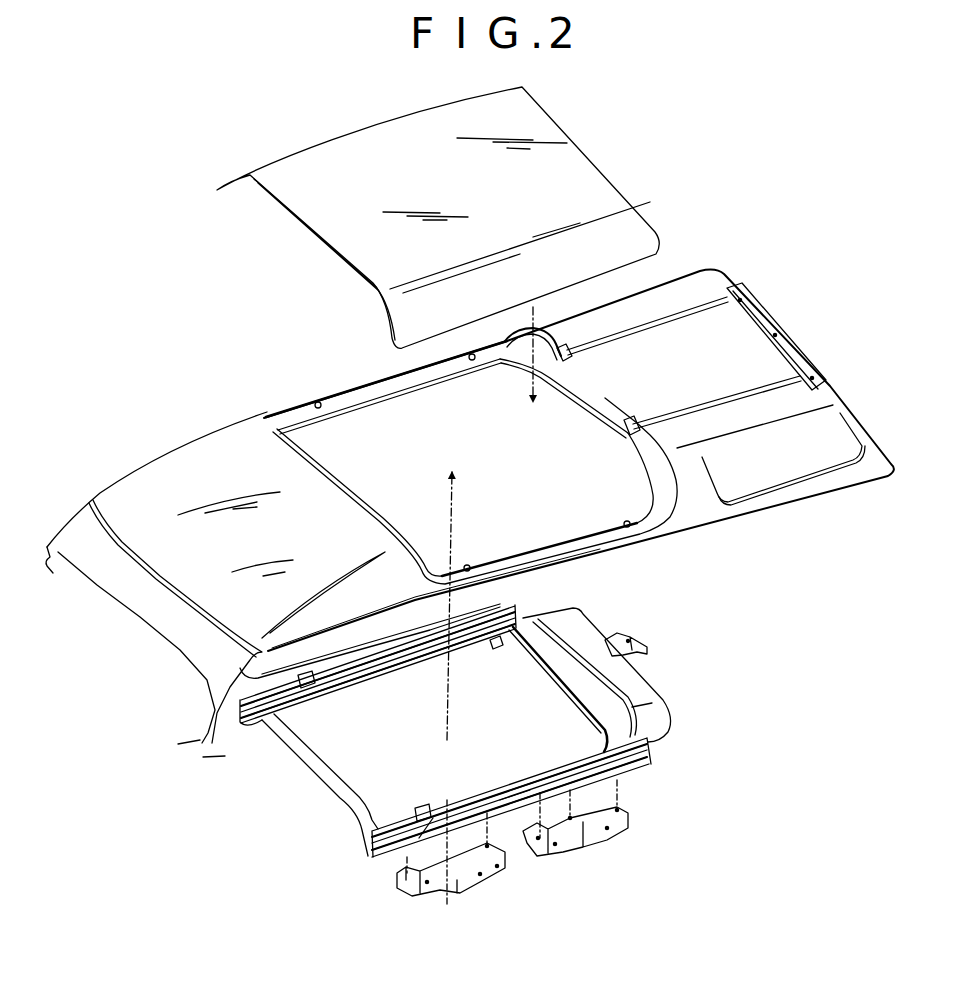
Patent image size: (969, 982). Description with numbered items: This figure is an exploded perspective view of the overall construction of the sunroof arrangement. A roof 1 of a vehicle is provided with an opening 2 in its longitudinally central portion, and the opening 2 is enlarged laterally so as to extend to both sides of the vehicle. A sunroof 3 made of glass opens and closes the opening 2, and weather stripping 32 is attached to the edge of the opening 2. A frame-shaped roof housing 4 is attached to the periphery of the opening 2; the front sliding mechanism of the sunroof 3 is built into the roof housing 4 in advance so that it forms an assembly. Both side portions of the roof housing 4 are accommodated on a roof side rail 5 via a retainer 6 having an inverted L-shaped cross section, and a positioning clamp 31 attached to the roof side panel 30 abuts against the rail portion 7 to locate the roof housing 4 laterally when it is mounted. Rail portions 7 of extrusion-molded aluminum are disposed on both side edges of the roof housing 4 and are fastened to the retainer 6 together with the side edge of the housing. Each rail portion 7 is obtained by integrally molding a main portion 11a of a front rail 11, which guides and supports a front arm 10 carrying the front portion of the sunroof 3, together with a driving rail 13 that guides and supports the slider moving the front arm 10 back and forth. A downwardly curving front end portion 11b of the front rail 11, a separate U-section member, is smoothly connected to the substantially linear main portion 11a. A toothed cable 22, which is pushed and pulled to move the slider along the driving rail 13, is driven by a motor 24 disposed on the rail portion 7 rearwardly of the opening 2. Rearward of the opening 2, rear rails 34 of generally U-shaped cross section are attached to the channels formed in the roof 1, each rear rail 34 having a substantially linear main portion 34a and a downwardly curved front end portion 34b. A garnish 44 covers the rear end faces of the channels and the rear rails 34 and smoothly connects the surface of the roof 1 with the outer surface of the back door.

The roof 1 is at (694, 268).
The opening 2 is at (511, 470).
The sunroof 3 is at (620, 158).
The roof housing 4 is at (324, 786).
The roof side rail 5 is at (450, 365).
The retainer 6 is at (590, 843).
The rail portion 7 is at (375, 676).
The front arm 10 is at (308, 672).
The front rail 11 is at (377, 642).
The main portion of front rail 11a is at (498, 800).
The front end portion of front rail 11b is at (417, 843).
The driving rail 13 is at (398, 663).
The toothed cable 22 is at (660, 702).
The motor 24 is at (648, 645).
The roof side panel 30 is at (406, 374).
The positioning clamp 31 is at (322, 408).
The weather stripping 32 is at (538, 548).
The rear rail 34 is at (700, 302).
The main portion of rear rail 34a is at (657, 316).
The front end portion of rear rail 34b is at (566, 347).
The garnish 44 is at (790, 337).